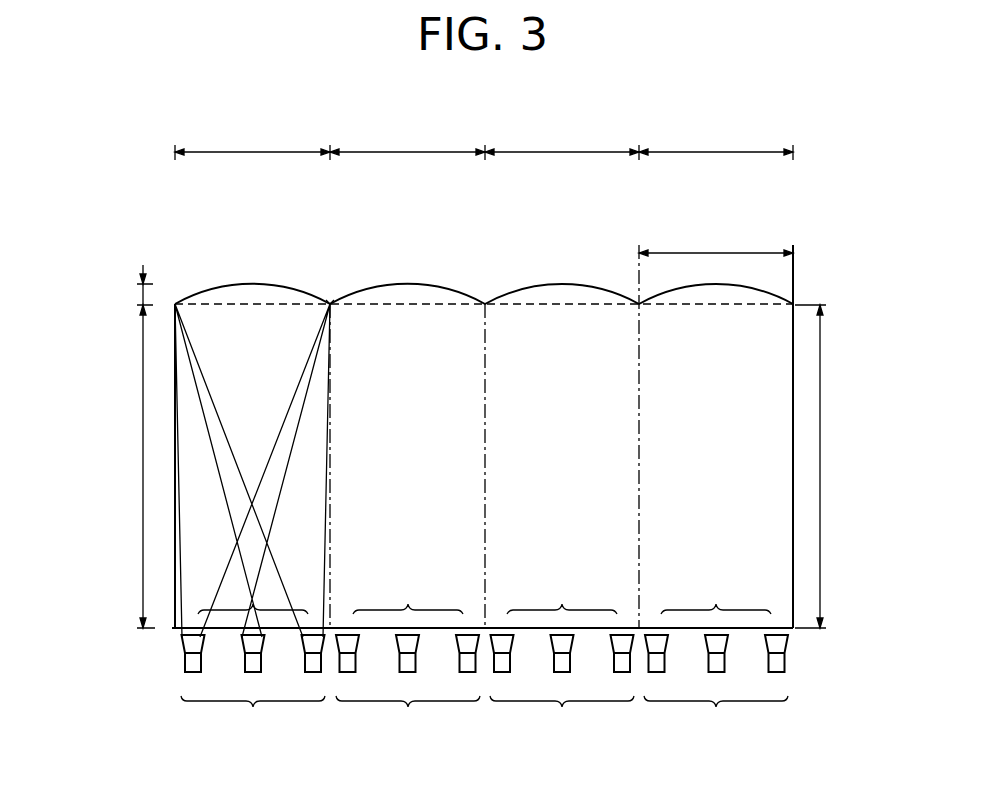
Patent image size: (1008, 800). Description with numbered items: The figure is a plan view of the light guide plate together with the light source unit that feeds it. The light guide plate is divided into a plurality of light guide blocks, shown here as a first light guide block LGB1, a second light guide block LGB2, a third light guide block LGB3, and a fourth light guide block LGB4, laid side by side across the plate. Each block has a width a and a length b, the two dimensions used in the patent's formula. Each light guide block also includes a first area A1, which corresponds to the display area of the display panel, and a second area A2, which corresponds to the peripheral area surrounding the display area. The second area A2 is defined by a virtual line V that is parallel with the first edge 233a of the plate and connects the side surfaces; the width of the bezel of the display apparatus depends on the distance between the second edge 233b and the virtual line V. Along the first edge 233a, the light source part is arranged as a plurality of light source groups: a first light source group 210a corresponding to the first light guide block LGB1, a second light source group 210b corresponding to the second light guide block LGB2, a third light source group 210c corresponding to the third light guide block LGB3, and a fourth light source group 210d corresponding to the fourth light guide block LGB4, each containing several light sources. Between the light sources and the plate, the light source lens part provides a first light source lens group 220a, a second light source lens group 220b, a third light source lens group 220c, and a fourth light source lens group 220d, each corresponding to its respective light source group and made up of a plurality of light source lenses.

The first edge 233a is at (180, 630).
The second edge 233b is at (303, 293).
The virtual line V is at (278, 302).
The first light source lens group 220a is at (253, 597).
The second light source lens group 220b is at (408, 597).
The third light source lens group 220c is at (562, 597).
The fourth light source lens group 220d is at (716, 597).
The first light source group 210a is at (253, 716).
The second light source group 210b is at (408, 716).
The third light source group 210c is at (562, 716).
The fourth light source group 210d is at (716, 716).
The first light guide block LGB1 is at (252, 140).
The second light guide block LGB2 is at (407, 140).
The third light guide block LGB3 is at (562, 140).
The fourth light guide block LGB4 is at (716, 140).
The width of a light guide block a is at (716, 241).
The length of the light guide block b is at (817, 466).
The first area A1 is at (132, 466).
The second area A2 is at (131, 285).